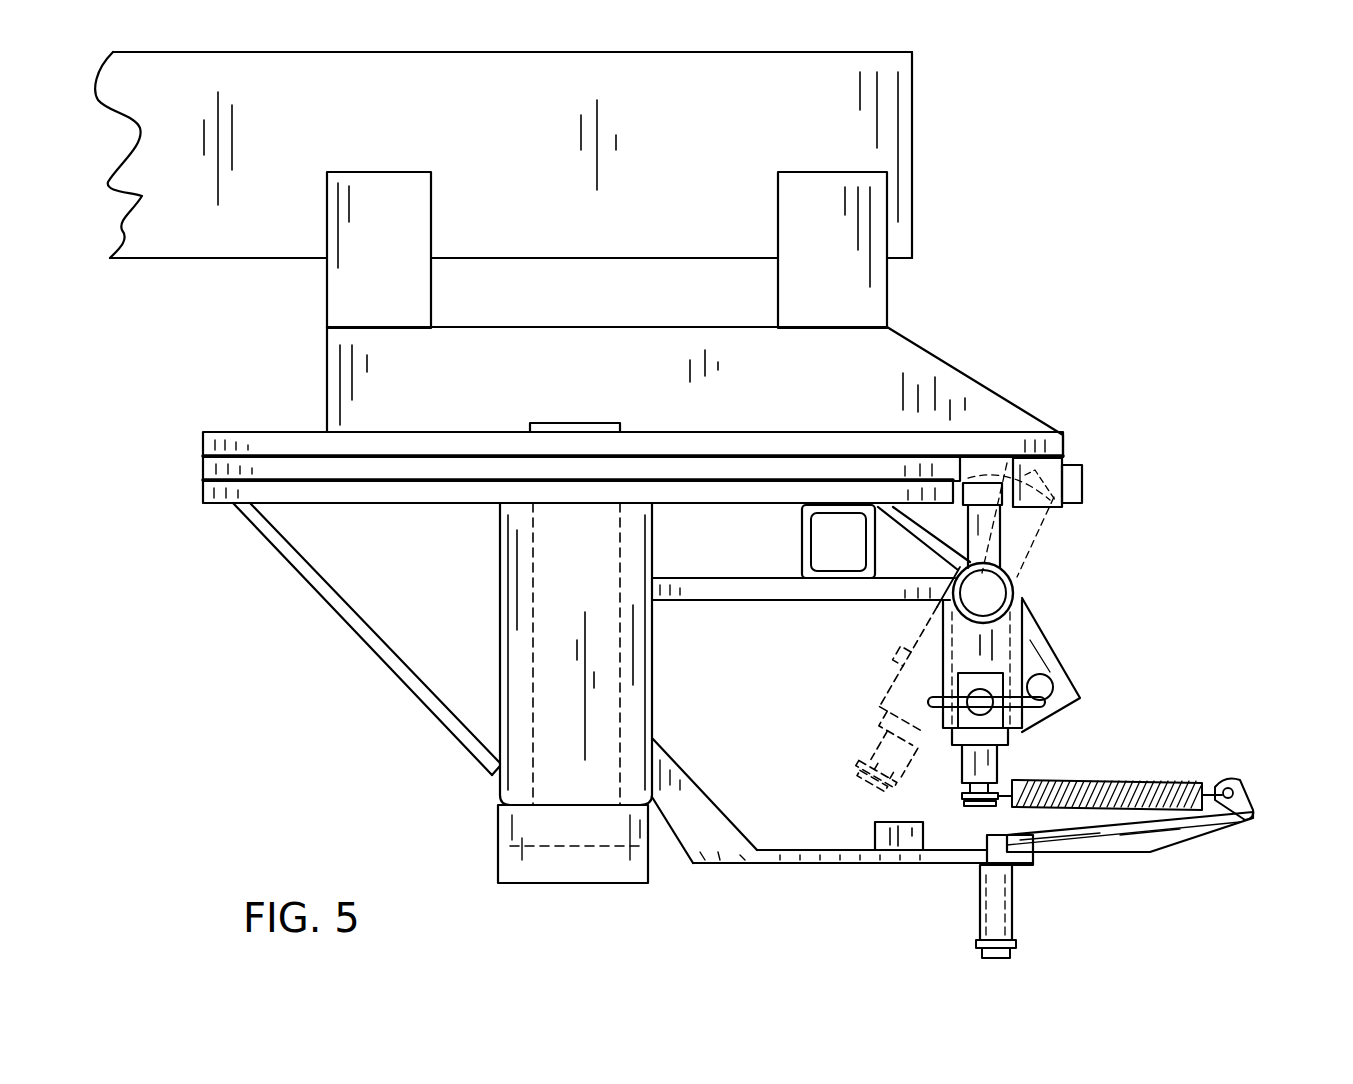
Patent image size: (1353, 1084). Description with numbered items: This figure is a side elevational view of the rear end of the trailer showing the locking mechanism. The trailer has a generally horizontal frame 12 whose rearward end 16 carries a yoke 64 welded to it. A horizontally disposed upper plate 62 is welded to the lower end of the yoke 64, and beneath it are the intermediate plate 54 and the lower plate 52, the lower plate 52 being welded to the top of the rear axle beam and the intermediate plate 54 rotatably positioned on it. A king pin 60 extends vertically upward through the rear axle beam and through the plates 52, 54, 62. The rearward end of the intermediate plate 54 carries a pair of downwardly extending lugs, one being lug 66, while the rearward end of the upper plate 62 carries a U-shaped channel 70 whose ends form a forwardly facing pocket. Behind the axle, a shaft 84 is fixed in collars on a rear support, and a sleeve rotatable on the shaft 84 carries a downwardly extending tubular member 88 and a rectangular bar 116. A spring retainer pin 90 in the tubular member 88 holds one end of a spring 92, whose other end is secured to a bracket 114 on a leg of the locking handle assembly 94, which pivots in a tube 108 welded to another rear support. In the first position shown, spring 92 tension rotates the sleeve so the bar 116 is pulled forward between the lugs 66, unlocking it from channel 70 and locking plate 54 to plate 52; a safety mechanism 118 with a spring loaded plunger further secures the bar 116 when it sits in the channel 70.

The frame 12 is at (932, 100).
The rearward end 16 is at (923, 176).
The yoke 64 is at (893, 325).
The upper plate 62 is at (253, 430).
The intermediate plate 54 is at (200, 467).
The lower plate 52 is at (226, 497).
The king pin 60 is at (600, 422).
The lug 66 is at (985, 490).
The U-shaped channel 70 is at (1055, 468).
The rectangular bar 116 is at (985, 535).
The shaft 84 is at (990, 594).
The tubular member 88 is at (1000, 640).
The safety mechanism 118 is at (1038, 699).
The spring retainer pin 90 is at (985, 762).
The spring 92 is at (1105, 782).
The bracket 114 is at (1232, 784).
The locking handle assembly 94 is at (1225, 823).
The tube 108 is at (1015, 905).